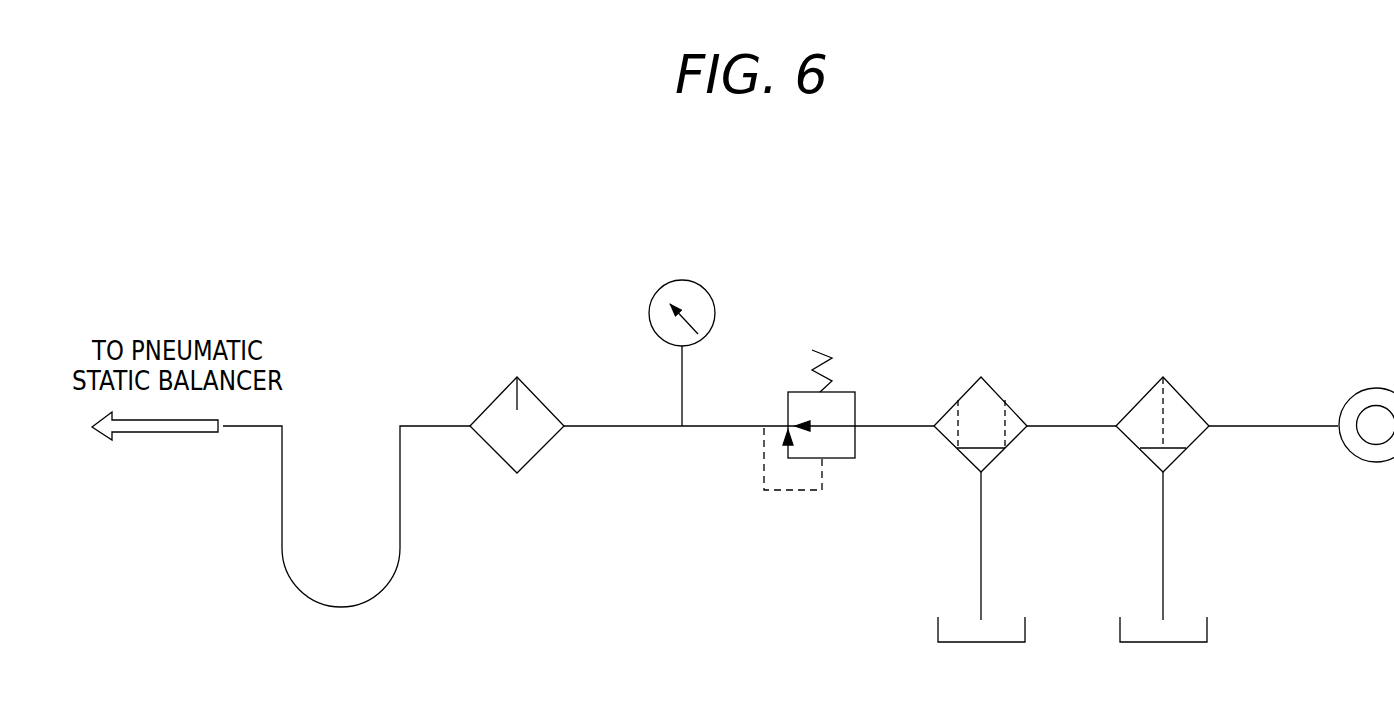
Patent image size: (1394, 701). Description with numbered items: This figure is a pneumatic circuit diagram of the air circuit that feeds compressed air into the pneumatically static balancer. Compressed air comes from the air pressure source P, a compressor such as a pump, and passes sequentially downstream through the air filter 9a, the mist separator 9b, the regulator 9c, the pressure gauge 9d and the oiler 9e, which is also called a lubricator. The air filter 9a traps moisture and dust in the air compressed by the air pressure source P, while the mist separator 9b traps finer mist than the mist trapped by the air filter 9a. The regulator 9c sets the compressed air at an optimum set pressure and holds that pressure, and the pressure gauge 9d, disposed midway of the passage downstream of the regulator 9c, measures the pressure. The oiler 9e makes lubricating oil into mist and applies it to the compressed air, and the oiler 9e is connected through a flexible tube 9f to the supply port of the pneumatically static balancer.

The air filter 9a is at (1134, 383).
The mist separator 9b is at (962, 370).
The regulator 9c is at (790, 374).
The pressure gauge 9d is at (664, 268).
The oiler 9e is at (484, 384).
The flexible tube 9f is at (380, 588).
The air pressure source P is at (1356, 377).